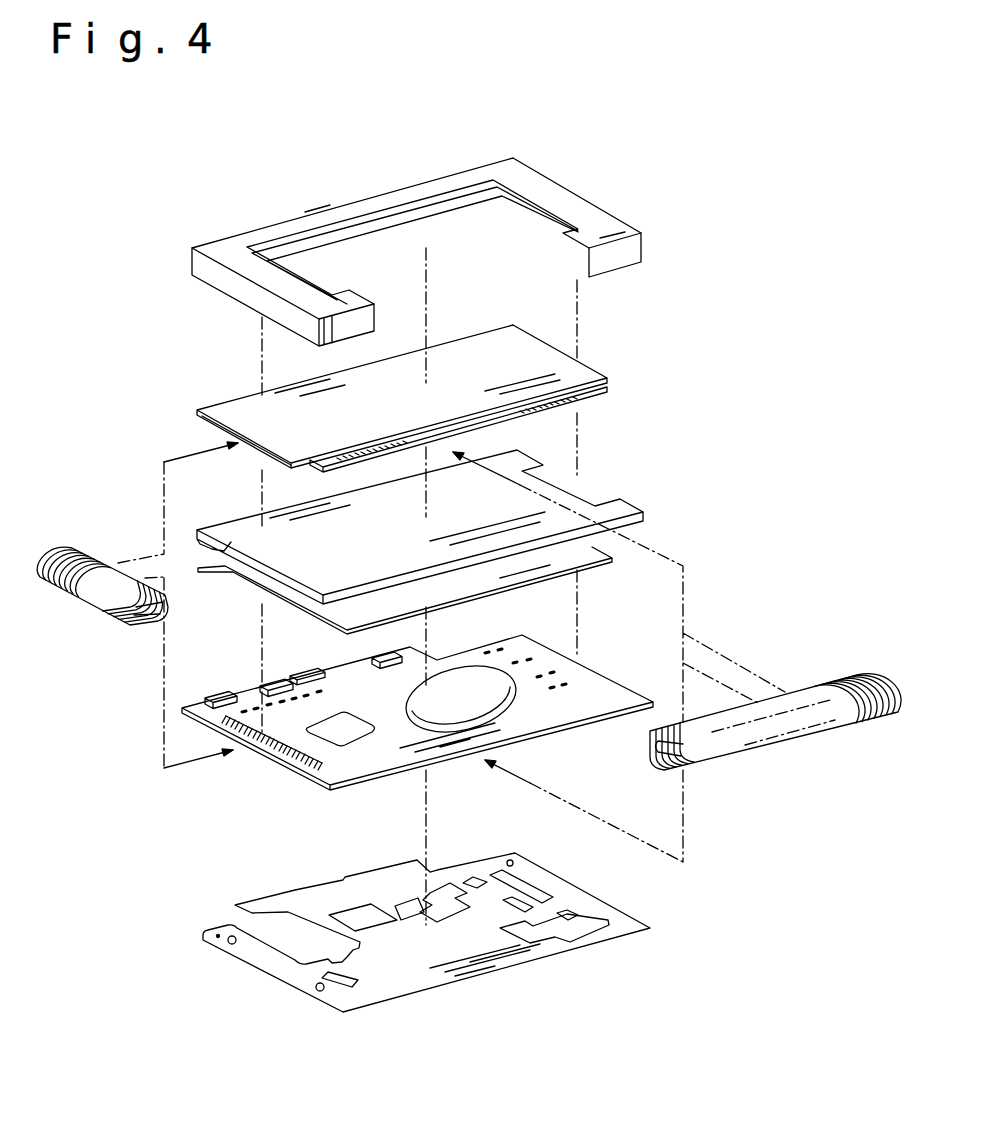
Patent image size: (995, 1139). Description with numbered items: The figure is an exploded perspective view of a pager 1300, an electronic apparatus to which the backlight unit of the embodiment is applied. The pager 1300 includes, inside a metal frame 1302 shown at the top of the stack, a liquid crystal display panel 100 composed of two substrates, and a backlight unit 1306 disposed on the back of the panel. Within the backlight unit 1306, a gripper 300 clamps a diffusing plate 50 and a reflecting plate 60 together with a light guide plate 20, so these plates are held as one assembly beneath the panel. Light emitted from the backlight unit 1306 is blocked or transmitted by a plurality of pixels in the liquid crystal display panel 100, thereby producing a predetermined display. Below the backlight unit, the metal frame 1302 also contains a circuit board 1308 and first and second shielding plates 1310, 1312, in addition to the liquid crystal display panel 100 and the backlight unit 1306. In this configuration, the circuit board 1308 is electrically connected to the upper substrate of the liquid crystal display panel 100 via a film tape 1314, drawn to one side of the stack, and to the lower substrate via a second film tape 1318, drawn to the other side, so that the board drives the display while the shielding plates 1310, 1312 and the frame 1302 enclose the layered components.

The pager 1300 is at (337, 150).
The metal frame 1302 is at (603, 222).
The liquid crystal display panel 100 is at (563, 377).
The backlight unit 1306 is at (587, 472).
The gripper 300 is at (593, 497).
The light guide plate 20 is at (405, 522).
The diffusing plate 50 is at (405, 522).
The reflecting plate 60 is at (357, 503).
The first shielding plate 1310 is at (585, 558).
The film tape 1314 is at (88, 598).
The circuit board 1308 is at (325, 775).
The film tape 1318 is at (793, 735).
The second shielding plate 1312 is at (623, 920).